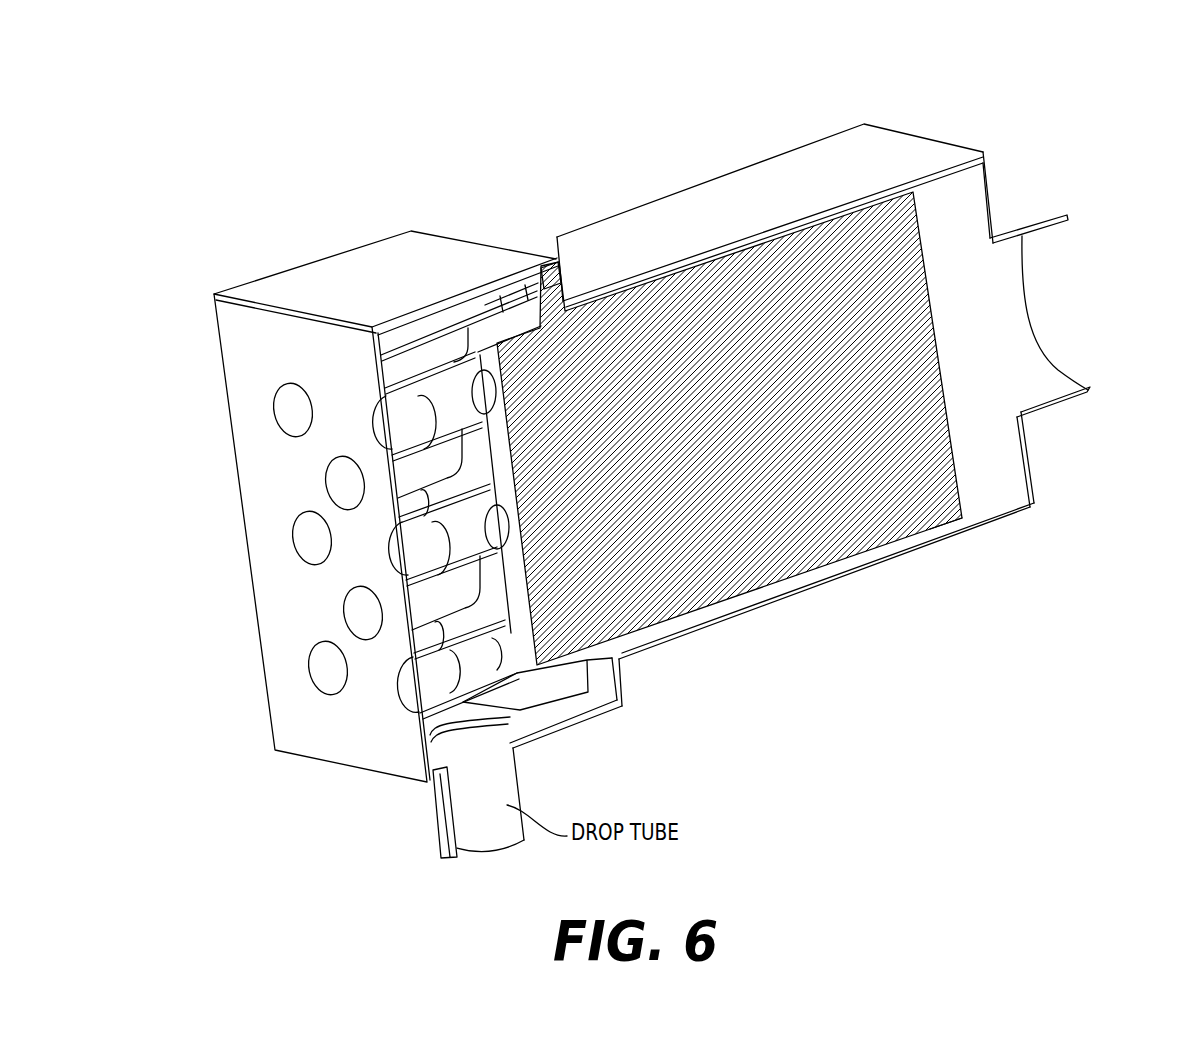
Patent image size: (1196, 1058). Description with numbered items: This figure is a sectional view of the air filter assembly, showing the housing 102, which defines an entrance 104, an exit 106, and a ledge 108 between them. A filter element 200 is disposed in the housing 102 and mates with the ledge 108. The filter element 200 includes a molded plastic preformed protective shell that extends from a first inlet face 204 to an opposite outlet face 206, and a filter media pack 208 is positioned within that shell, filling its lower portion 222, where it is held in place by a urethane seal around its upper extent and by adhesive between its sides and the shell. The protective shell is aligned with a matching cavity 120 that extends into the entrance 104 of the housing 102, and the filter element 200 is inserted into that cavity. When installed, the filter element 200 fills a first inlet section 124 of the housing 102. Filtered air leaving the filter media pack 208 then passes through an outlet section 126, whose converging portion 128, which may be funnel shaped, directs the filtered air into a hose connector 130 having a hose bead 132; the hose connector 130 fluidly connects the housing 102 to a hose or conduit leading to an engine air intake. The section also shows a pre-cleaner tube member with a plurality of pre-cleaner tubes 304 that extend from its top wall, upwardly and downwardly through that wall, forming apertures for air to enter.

The housing 102 is at (858, 172).
The entrance 104 is at (288, 542).
The exit 106 is at (1033, 320).
The ledge 108 is at (565, 278).
The matching cavity 120 is at (575, 713).
The first inlet section 124 is at (543, 265).
The outlet section 126 is at (998, 300).
The converging portion 128 is at (1031, 494).
The hose connector 130 is at (1088, 392).
The hose bead 132 is at (1056, 212).
The filter element 200 is at (503, 315).
The inlet face 204 is at (540, 633).
The outlet face 206 is at (960, 502).
The filter media pack 208 is at (740, 602).
The lower portion 222 is at (647, 638).
The pre-cleaner tubes 304 is at (465, 407).